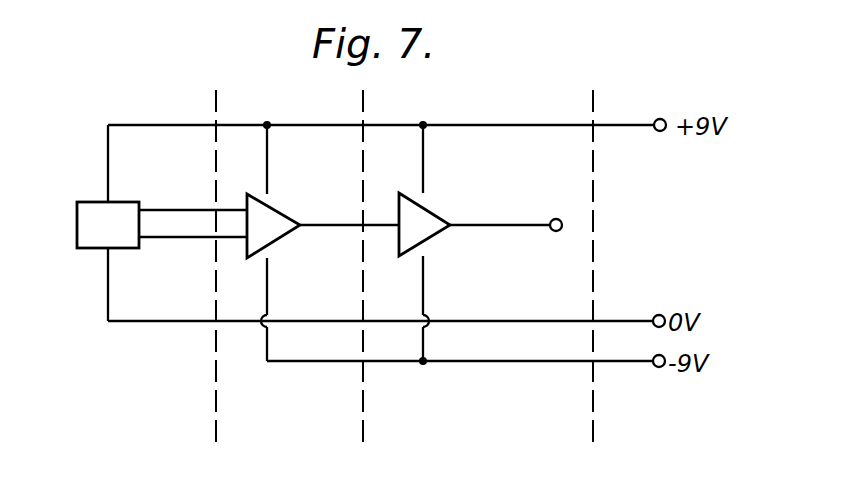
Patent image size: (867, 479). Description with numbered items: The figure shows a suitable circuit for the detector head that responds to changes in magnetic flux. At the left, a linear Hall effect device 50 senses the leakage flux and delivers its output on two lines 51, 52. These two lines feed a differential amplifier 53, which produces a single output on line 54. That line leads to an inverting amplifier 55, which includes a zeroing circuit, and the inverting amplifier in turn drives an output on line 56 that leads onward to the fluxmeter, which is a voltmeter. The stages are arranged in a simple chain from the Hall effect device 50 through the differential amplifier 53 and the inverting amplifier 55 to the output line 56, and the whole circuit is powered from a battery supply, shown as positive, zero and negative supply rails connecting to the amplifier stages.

The linear Hall effect device 50 is at (92, 237).
The output line 51 is at (175, 208).
The output line 52 is at (157, 239).
The differential amplifier 53 is at (275, 208).
The output line 54 is at (330, 213).
The inverting amplifier 55 is at (435, 206).
The output line 56 is at (513, 213).